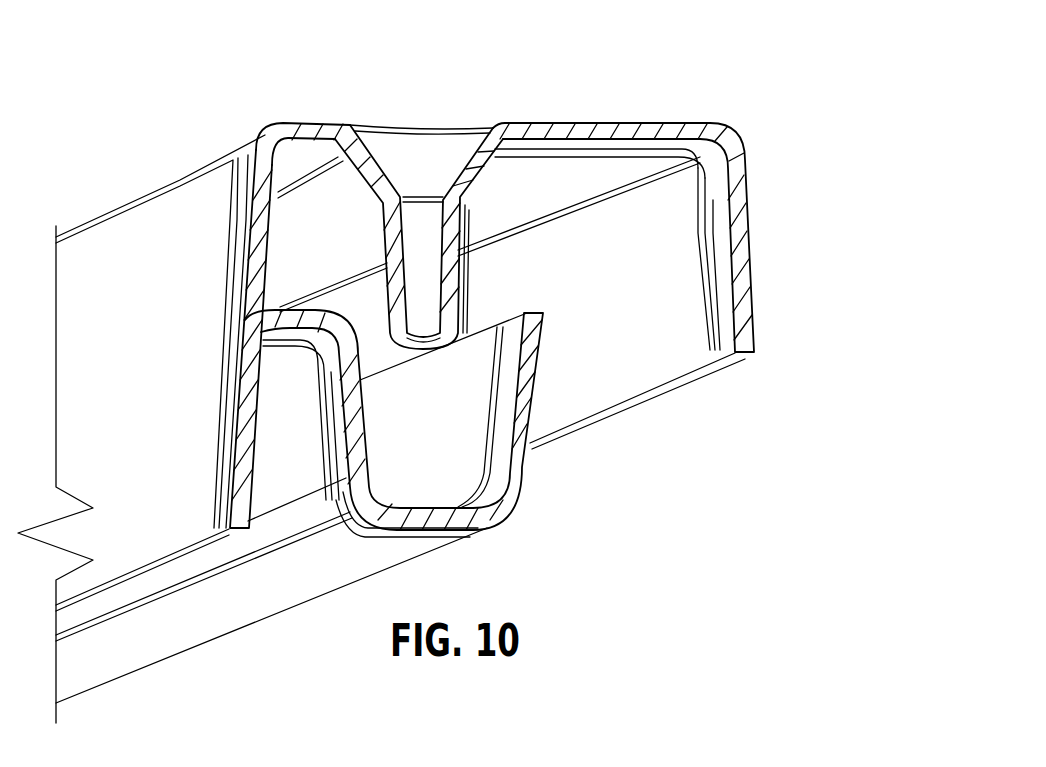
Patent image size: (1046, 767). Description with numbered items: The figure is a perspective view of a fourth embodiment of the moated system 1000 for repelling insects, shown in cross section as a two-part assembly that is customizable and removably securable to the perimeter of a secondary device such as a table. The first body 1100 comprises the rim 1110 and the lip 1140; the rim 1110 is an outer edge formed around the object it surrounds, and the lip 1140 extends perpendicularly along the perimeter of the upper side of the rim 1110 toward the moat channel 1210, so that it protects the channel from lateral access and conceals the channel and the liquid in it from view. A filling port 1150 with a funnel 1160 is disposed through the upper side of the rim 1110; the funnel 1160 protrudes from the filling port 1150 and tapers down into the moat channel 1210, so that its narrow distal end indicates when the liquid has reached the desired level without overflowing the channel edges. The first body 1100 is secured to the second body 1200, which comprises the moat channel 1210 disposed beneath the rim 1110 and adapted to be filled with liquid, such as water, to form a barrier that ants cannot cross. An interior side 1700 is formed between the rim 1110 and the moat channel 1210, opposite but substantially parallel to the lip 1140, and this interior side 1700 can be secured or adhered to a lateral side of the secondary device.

The moated system 1000 is at (803, 58).
The first body 1100 is at (756, 320).
The rim 1110 is at (604, 125).
The lip 1140 is at (748, 194).
The filling port 1150 is at (402, 137).
The funnel 1160 is at (392, 258).
The second body 1200 is at (540, 358).
The moat channel 1210 is at (517, 473).
The interior side 1700 is at (150, 553).